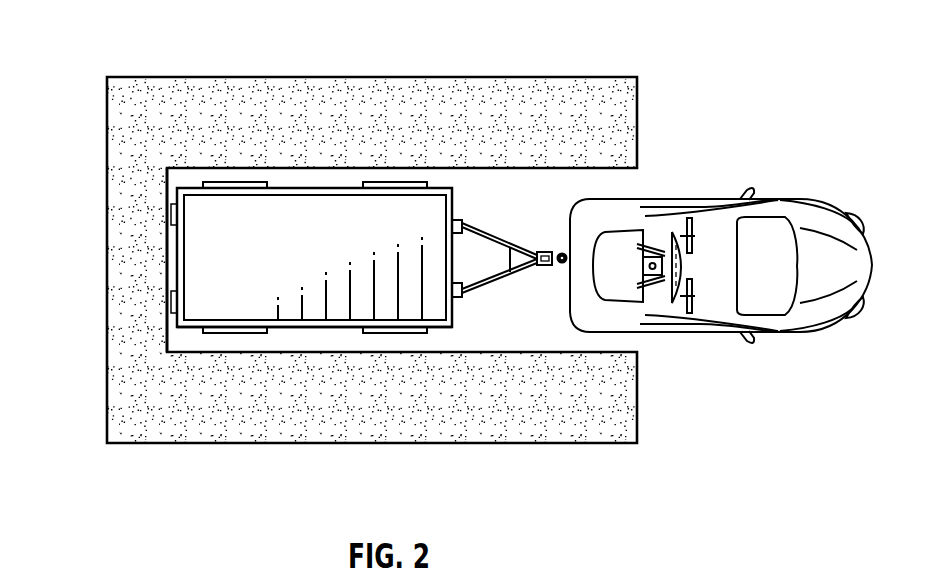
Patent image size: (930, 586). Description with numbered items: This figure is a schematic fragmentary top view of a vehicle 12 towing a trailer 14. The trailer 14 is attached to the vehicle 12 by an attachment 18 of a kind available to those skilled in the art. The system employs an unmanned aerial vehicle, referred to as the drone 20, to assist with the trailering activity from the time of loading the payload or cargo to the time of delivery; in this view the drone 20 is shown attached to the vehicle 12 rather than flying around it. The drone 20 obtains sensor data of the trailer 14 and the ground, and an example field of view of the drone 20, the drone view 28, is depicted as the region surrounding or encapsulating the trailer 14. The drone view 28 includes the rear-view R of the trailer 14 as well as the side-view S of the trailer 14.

The vehicle 12 is at (837, 186).
The trailer 14 is at (322, 187).
The attachment 18 is at (485, 210).
The unmanned aerial vehicle 20 is at (677, 223).
The drone view 28 is at (438, 77).
The rear-view R is at (163, 245).
The side-view S is at (357, 346).